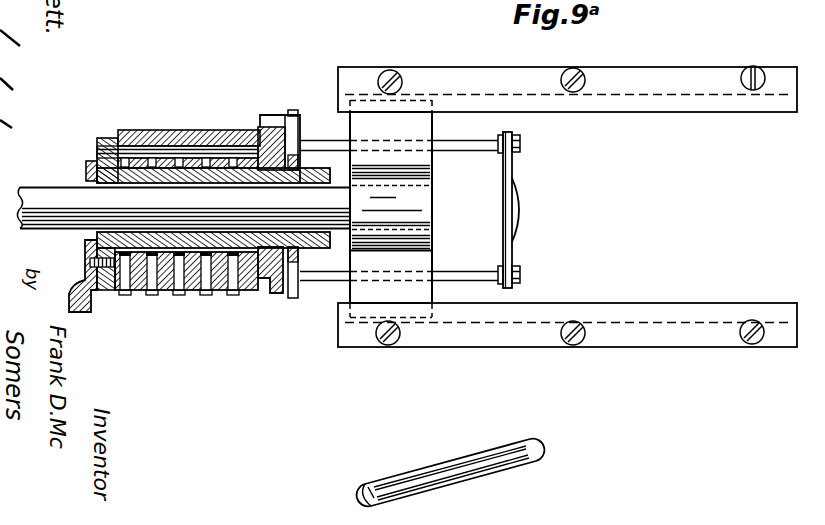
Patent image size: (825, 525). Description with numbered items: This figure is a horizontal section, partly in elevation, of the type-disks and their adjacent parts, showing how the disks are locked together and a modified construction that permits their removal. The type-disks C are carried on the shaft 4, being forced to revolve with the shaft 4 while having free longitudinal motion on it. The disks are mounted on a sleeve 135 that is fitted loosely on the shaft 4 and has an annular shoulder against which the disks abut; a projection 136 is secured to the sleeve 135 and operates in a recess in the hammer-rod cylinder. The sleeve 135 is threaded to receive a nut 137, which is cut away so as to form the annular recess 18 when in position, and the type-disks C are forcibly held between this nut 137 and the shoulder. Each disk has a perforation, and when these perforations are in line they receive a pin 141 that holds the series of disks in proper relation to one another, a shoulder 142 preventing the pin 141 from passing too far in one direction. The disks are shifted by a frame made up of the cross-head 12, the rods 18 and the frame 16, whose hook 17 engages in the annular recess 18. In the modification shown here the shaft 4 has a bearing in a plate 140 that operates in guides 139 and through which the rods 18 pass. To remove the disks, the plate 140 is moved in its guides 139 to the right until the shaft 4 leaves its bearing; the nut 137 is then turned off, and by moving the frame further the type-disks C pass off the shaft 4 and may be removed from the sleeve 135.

The shaft 4 is at (183, 208).
The cross-head 12 is at (523, 210).
The frame 16 is at (298, 265).
The hook 17 is at (279, 138).
The annular recess 18 is at (258, 309).
The sleeve 135 is at (86, 173).
The projection 136 is at (199, 281).
The nut 137 is at (273, 293).
The guides 139 is at (567, 206).
The plate 140 is at (391, 209).
The pin 141 is at (320, 302).
The shoulder 142 is at (371, 483).
The type-disks C is at (186, 208).